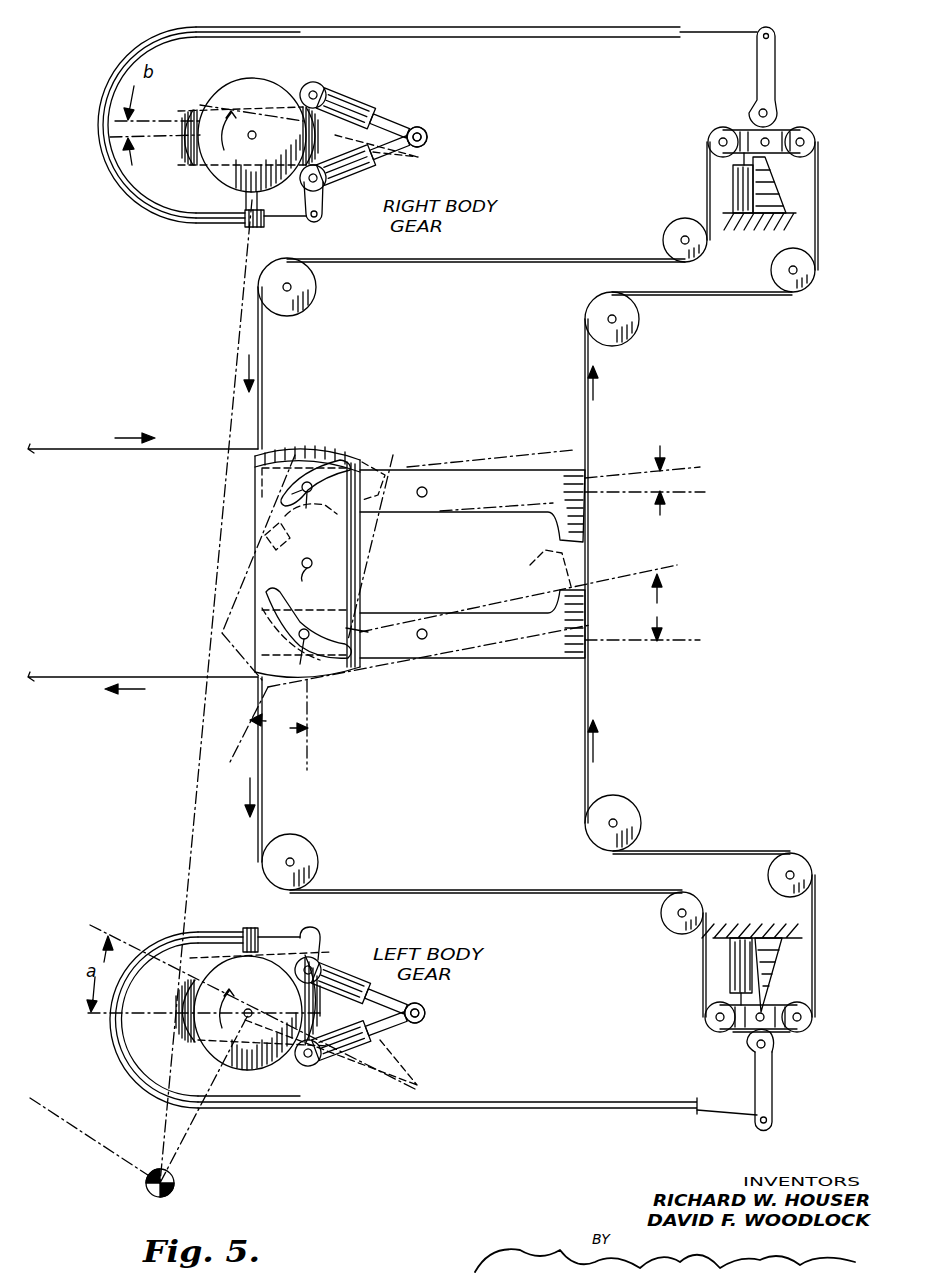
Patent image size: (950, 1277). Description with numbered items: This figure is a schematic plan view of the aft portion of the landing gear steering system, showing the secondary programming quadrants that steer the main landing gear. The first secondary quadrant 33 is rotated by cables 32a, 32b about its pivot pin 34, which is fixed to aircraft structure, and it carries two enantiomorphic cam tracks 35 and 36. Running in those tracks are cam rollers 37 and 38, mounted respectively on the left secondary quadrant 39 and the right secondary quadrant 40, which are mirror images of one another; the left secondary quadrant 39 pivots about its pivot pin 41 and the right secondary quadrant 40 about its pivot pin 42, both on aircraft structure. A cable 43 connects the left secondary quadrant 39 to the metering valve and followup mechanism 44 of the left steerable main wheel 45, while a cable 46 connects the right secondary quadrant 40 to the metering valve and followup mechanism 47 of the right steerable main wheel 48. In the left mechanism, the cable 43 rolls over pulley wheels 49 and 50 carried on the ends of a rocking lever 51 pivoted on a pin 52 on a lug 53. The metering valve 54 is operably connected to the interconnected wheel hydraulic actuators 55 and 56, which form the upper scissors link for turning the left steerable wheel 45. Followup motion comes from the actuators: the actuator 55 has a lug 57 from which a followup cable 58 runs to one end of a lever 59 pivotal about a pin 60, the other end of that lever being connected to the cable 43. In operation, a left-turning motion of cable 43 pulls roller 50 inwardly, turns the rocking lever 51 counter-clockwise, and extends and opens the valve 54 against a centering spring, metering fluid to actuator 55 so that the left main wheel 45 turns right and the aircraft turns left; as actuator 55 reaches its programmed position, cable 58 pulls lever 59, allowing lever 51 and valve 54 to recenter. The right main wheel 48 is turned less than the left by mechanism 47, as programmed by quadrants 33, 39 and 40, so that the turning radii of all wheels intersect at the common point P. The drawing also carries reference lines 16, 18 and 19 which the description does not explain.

The reference line 16 is at (46, 1110).
The reference line to pivot 18 is at (194, 1137).
The reference axis line 19 is at (192, 832).
The cable 32a is at (92, 678).
The cable 32b is at (90, 446).
The first secondary quadrant 33 is at (350, 571).
The pivot pin 34 is at (313, 592).
The cam track 35 is at (262, 630).
The cam track 36 is at (380, 462).
The cam roller 37 is at (318, 632).
The cam roller 38 is at (305, 478).
The left secondary quadrant 39 is at (480, 641).
The right secondary quadrant 40 is at (488, 503).
The pivot pin 41 is at (422, 629).
The pivot pin 42 is at (422, 497).
The cable 43 is at (468, 890).
The metering valve and followup mechanism 44 is at (788, 1080).
The left steerable main wheel 45 is at (186, 1032).
The cable 46 is at (507, 258).
The metering valve and followup mechanism 47 is at (794, 80).
The right steerable main wheel 48 is at (176, 146).
The pulley wheel 49 is at (708, 1017).
The pulley wheel 50 is at (805, 1030).
The rocking lever 51 is at (780, 1015).
The pin 52 is at (800, 1004).
The lug 53 is at (770, 975).
The metering valve 54 is at (730, 966).
The wheel hydraulic actuator 55 is at (396, 986).
The wheel hydraulic actuator 56 is at (380, 1043).
The lug 57 is at (322, 940).
The followup cable 58 is at (288, 936).
The lever 59 is at (755, 1074).
The pin 60 is at (748, 1046).
The common point P is at (180, 1183).